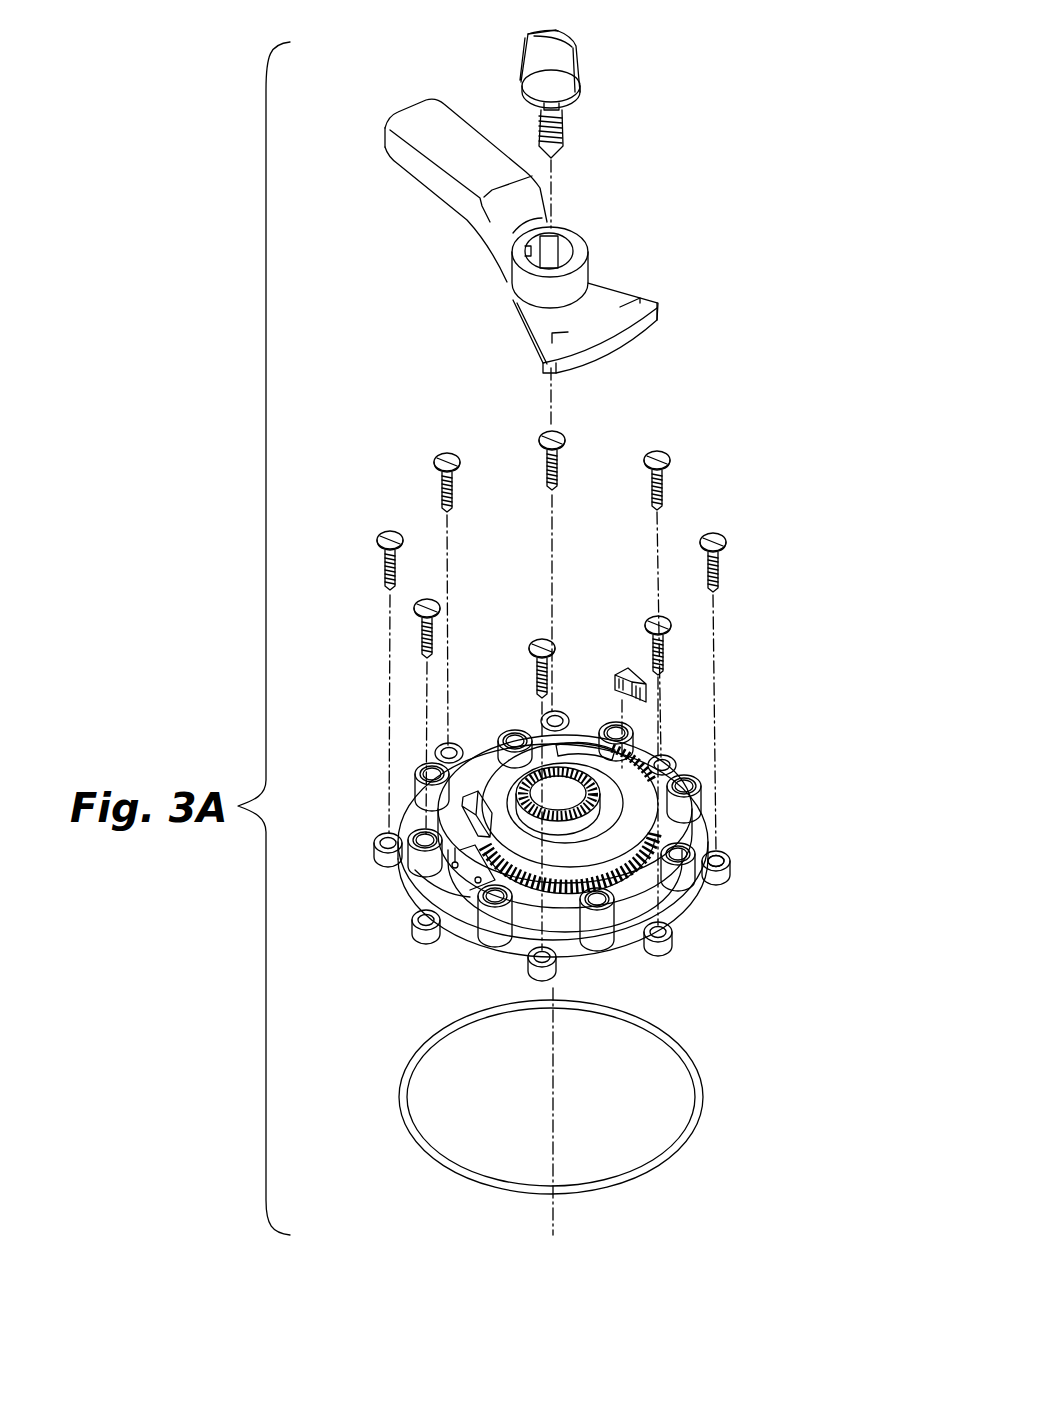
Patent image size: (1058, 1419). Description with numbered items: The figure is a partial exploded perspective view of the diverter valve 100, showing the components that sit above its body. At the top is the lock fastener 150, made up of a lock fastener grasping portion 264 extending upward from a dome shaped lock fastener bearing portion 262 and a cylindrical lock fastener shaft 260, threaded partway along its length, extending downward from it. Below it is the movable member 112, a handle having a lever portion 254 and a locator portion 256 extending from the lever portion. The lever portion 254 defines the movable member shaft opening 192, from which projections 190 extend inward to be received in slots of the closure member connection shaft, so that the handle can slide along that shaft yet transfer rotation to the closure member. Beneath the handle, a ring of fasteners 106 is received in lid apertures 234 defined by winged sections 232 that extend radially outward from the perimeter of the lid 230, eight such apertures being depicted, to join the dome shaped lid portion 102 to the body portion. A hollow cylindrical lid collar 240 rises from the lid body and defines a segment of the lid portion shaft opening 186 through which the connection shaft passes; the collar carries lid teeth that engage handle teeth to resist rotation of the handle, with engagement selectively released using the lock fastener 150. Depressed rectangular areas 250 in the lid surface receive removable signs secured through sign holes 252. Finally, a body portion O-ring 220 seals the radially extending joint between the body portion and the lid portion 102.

The diverter valve 100 is at (740, 403).
The lid portion 102 is at (688, 923).
The fasteners 106 is at (725, 537).
The movable member 112 is at (414, 108).
The lock fastener 150 is at (574, 58).
The lid portion shaft opening 186 is at (632, 766).
The projections 190 is at (567, 240).
The movable member shaft opening 192 is at (523, 250).
The body portion O-ring 220 is at (680, 1047).
The lid 230 is at (467, 945).
The winged sections 232 is at (735, 878).
The lid apertures 234 is at (720, 861).
The lid collar 240 is at (652, 787).
The depressed rectangular areas 250 is at (467, 885).
The sign holes 252 is at (440, 815).
The lever portion 254 is at (408, 163).
The locator portion 256 is at (610, 297).
The lock fastener shaft 260 is at (537, 118).
The lock fastener bearing portion 262 is at (560, 90).
The lock fastener grasping portion 264 is at (558, 36).